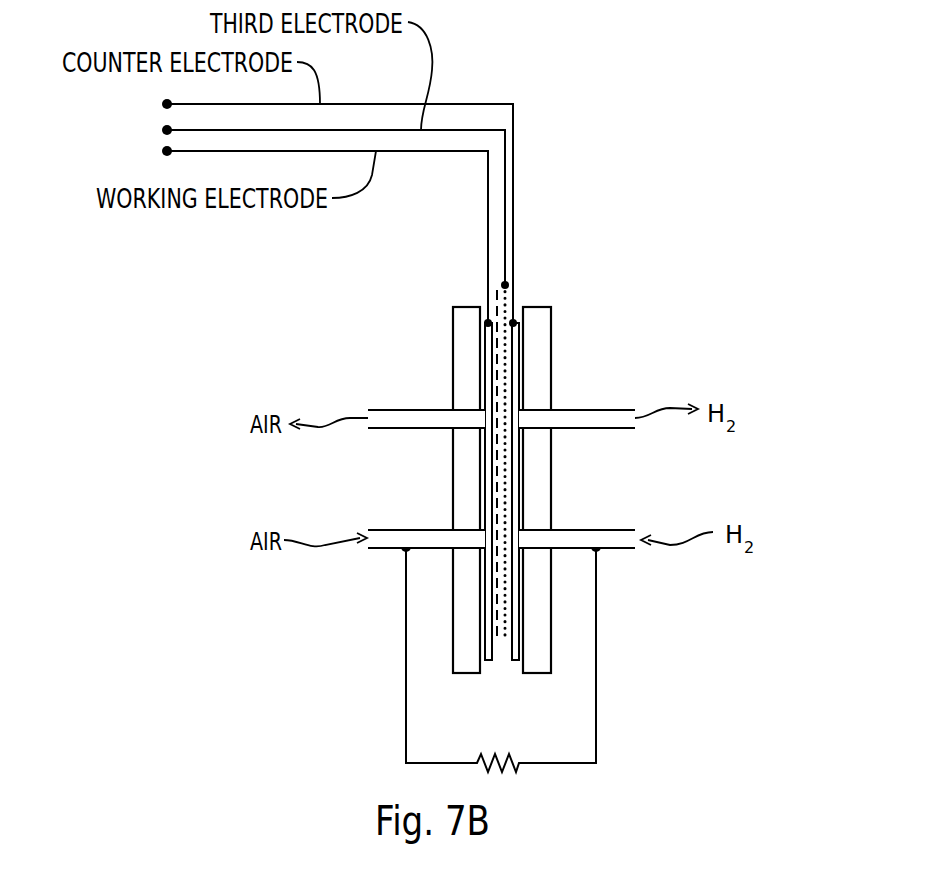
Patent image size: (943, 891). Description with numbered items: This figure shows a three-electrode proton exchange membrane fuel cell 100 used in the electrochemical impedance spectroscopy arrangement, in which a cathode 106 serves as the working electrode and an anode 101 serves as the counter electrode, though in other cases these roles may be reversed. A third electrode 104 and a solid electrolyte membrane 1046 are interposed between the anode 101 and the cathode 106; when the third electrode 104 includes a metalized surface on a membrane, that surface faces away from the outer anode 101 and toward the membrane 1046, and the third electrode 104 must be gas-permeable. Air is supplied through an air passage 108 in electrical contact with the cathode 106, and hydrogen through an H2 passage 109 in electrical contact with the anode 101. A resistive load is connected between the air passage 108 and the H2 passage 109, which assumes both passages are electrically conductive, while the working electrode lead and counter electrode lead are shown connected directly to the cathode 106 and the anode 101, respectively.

The fuel cell 100 is at (640, 336).
The anode 101 is at (519, 581).
The third electrode 104 is at (512, 627).
The cathode 106 is at (489, 581).
The air passage 108 is at (417, 530).
The H2 passage 109 is at (570, 530).
The solid electrolyte membrane 1046 is at (497, 615).